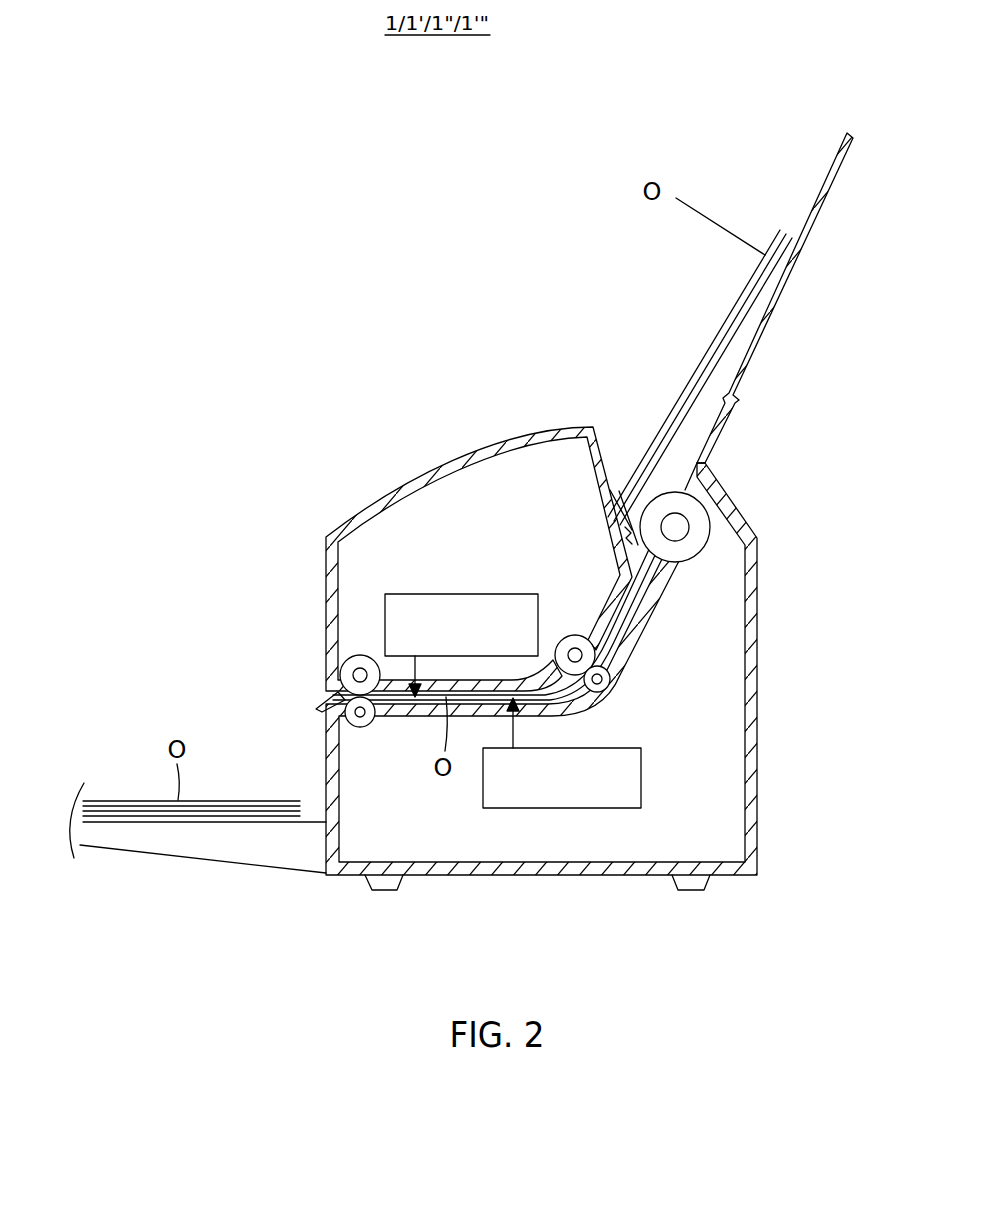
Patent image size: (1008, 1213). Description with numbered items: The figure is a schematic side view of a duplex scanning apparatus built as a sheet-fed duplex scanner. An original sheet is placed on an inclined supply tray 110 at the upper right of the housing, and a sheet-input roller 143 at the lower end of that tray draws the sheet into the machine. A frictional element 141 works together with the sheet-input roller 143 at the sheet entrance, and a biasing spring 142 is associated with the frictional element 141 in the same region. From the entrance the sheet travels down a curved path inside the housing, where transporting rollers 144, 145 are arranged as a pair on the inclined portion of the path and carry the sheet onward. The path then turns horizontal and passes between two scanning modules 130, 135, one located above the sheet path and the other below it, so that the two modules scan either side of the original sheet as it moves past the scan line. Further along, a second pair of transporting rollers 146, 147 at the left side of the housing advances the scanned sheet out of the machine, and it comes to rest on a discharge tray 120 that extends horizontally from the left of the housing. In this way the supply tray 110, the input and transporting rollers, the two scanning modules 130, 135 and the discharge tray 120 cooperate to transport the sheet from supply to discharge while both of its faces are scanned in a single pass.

The supply tray 110 is at (752, 346).
The discharge tray 120 is at (108, 838).
The scanning module 130 is at (481, 595).
The scanning module 135 is at (643, 789).
The frictional element 141 is at (619, 497).
The biasing spring 142 is at (622, 532).
The sheet-input roller 143 is at (703, 513).
The transporting roller 144 is at (580, 635).
The transporting roller 145 is at (606, 688).
The transporting roller 146 is at (362, 655).
The transporting roller 147 is at (362, 728).